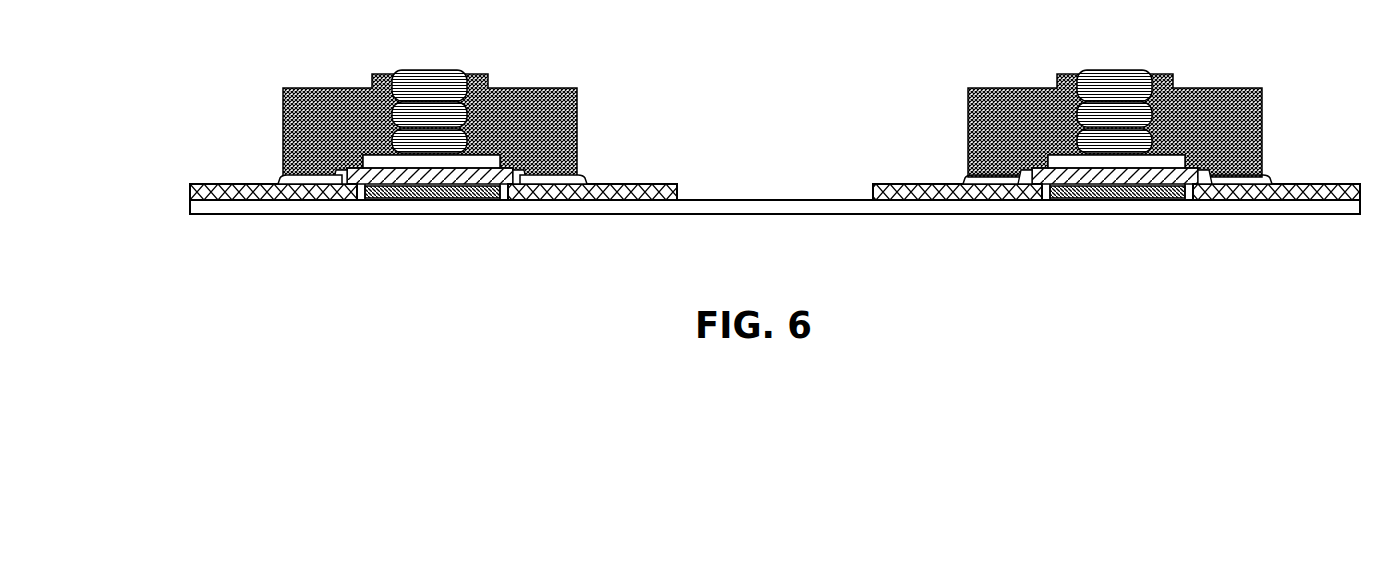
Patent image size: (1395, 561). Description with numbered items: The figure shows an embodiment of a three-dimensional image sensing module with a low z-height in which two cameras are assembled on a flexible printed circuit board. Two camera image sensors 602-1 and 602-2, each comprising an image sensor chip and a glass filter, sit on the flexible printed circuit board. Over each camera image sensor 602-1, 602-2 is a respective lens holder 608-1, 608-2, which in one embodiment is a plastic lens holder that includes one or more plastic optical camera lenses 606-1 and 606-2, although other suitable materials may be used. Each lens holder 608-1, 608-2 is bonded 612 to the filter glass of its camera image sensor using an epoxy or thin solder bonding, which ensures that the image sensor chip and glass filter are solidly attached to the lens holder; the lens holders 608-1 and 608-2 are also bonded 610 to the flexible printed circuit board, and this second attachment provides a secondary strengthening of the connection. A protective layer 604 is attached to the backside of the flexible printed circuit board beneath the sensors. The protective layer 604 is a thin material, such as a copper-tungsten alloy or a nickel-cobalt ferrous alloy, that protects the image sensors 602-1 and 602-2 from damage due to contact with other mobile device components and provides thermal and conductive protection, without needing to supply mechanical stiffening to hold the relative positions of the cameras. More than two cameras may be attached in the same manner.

The camera image sensor 602-1 is at (433, 200).
The camera image sensor 602-2 is at (1118, 200).
The protective layer 604 is at (768, 214).
The optical camera lens 606-1 is at (443, 69).
The optical camera lens 606-2 is at (1128, 69).
The lens holder 608-1 is at (598, 89).
The lens holder 608-2 is at (1283, 89).
The bonding to the flexible printed circuit board 610 is at (282, 176).
The bonding to the camera image sensors 612 is at (361, 200).